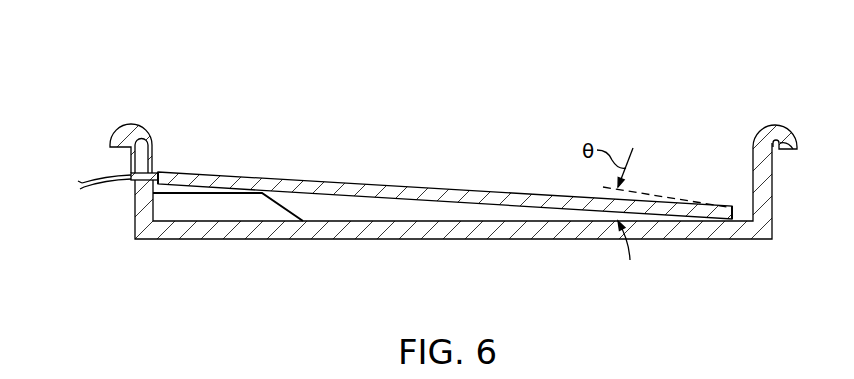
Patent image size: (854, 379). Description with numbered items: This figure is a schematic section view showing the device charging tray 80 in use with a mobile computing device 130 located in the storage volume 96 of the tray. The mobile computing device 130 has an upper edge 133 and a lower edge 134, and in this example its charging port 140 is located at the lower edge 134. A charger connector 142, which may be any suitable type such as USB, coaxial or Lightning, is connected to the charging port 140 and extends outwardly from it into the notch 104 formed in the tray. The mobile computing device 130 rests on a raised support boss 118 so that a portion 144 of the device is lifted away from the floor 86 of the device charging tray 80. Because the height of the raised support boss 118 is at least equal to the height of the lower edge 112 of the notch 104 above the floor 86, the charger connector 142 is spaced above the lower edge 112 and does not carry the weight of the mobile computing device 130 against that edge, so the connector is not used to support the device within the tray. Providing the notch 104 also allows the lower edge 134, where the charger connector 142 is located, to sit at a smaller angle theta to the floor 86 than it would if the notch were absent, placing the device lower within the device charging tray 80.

The device charging tray 80 is at (685, 142).
The floor 86 is at (487, 213).
The storage volume 96 is at (445, 168).
The notch 104 is at (122, 162).
The lower edge 112 is at (132, 183).
The raised support boss 118 is at (180, 210).
The mobile computing device 130 is at (352, 167).
The upper edge 133 is at (731, 206).
The lower edge 134 is at (159, 172).
The charging port 140 is at (150, 197).
The charger connector 142 is at (141, 172).
The portion 144 is at (273, 130).